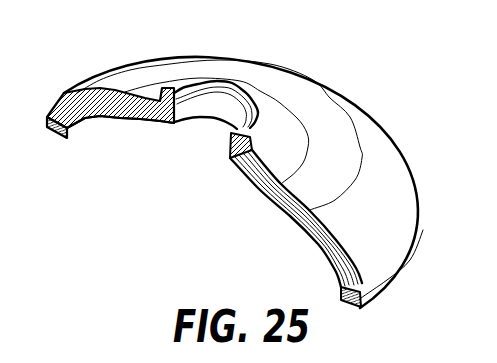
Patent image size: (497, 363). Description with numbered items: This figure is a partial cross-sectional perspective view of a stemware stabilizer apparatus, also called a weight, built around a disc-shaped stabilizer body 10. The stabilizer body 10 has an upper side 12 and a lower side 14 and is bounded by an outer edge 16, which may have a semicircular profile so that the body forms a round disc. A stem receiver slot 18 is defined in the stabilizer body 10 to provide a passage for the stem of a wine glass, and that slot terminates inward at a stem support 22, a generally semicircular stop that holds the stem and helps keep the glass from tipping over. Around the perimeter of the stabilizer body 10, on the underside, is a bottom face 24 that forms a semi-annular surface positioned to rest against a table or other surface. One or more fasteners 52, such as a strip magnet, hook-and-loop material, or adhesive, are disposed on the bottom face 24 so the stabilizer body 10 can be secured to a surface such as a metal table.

The stabilizer body 10 is at (392, 89).
The upper side 12 is at (387, 148).
The lower side 14 is at (84, 118).
The outer edge 16 is at (408, 260).
The stem receiver slot 18 is at (198, 137).
The stem support 22 is at (218, 92).
The bottom face 24 is at (52, 113).
The fastener 52 is at (62, 141).